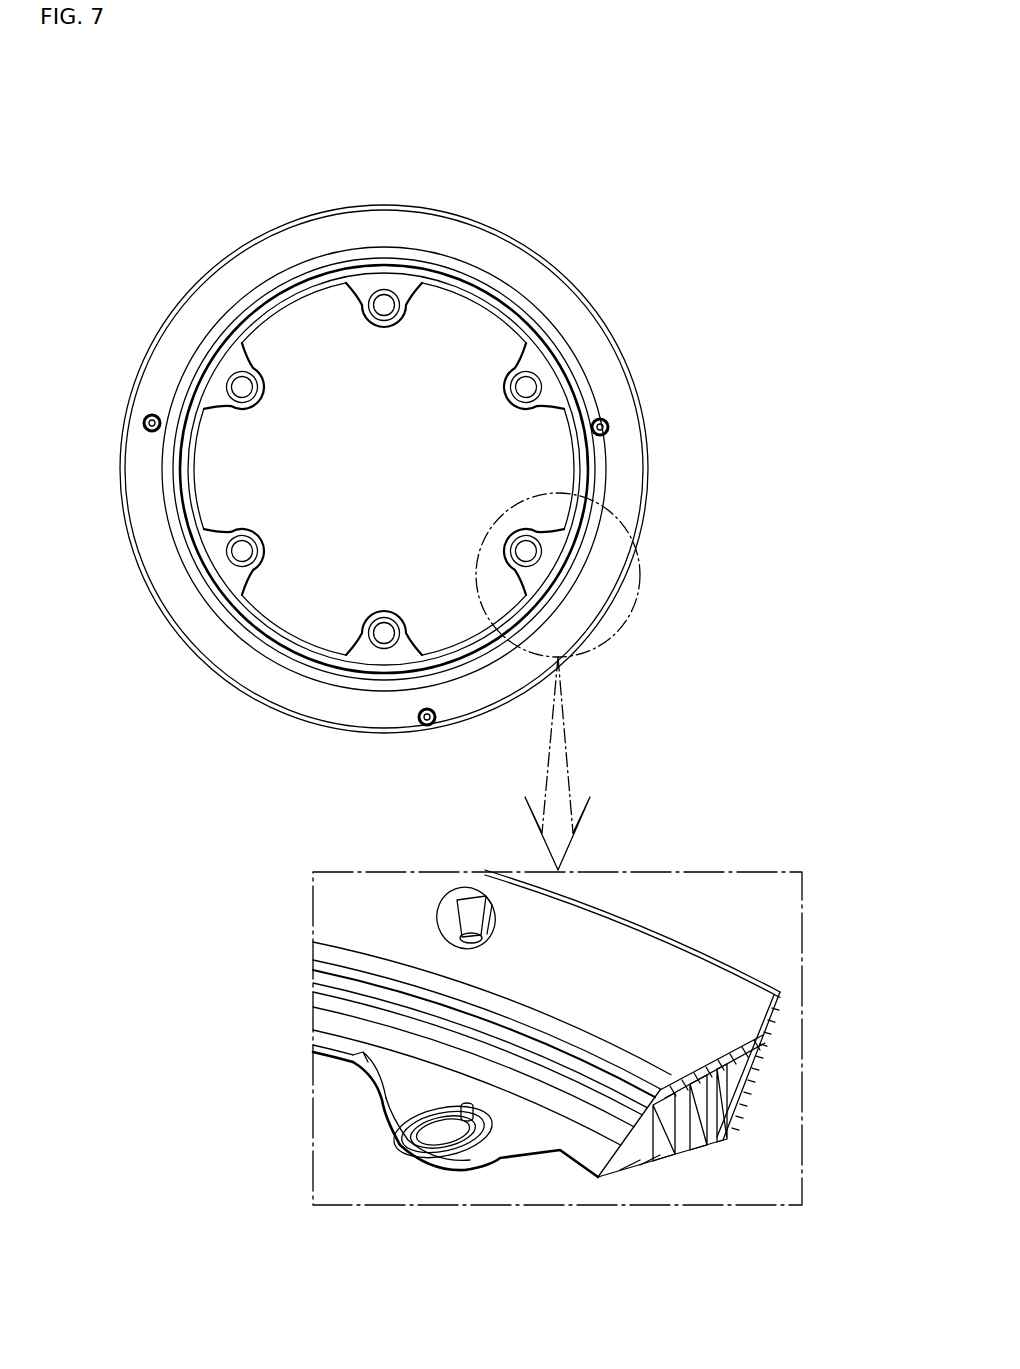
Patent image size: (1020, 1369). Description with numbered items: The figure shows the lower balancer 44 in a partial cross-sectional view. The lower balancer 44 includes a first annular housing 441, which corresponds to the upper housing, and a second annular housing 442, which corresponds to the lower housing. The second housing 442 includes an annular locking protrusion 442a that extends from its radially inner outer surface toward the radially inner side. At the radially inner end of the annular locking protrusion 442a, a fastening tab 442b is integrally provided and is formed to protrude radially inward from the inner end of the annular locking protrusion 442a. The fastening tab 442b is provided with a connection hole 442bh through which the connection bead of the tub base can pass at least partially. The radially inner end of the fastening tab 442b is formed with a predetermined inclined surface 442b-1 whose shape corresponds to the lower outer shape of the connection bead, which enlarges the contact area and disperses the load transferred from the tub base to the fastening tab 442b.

The lower balancer 44 is at (489, 695).
The first annular housing 441 is at (723, 1013).
The second annular housing 442 is at (740, 1112).
The annular locking protrusion 442a is at (277, 612).
The fastening tab 442b is at (375, 776).
The inclined surface 442b-1 is at (385, 1133).
The connection hole 442bh is at (444, 1140).